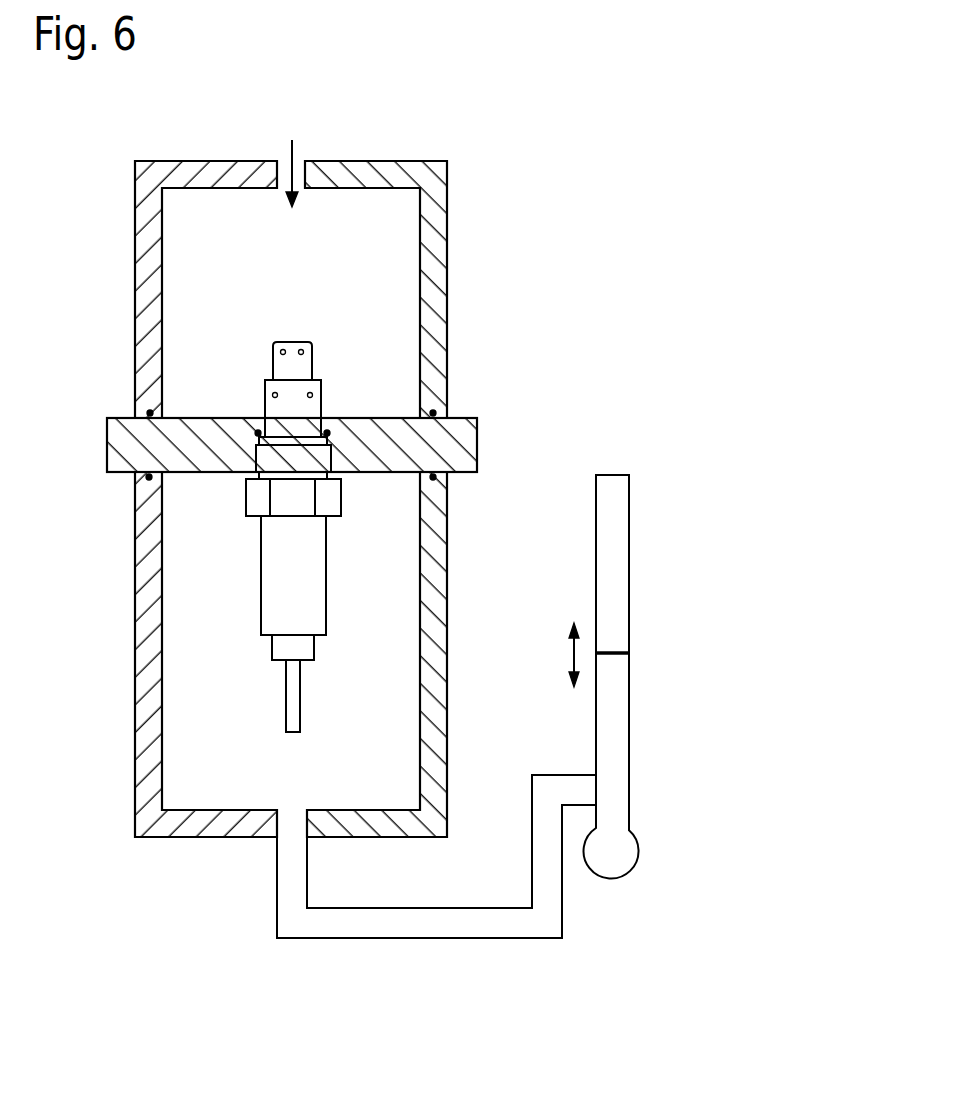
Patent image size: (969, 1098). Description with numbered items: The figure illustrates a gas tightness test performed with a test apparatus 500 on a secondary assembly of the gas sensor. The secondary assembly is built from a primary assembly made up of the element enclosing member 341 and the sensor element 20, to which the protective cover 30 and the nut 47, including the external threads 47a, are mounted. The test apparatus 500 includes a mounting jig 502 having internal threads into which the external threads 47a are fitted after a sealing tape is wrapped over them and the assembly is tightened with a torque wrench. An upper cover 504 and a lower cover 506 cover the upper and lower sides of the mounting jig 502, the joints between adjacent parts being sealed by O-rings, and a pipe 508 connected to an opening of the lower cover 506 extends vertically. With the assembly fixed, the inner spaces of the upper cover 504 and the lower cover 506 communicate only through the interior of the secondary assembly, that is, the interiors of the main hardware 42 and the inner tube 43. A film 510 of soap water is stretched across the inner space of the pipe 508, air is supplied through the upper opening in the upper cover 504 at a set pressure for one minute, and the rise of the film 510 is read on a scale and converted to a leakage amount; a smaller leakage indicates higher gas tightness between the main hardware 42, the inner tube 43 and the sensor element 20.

The test apparatus 500 is at (510, 136).
The upper cover 504 is at (447, 270).
The mounting jig 502 is at (477, 437).
The lower cover 506 is at (447, 520).
The pipe 508 is at (630, 583).
The film 510 is at (615, 651).
The protective cover 30 is at (340, 370).
The nut 47 is at (331, 460).
The external threads 47a is at (250, 461).
The main hardware 42 is at (261, 577).
The inner tube 43 is at (272, 650).
The sensor element 20 is at (286, 680).
The element enclosing member 341 is at (343, 696).